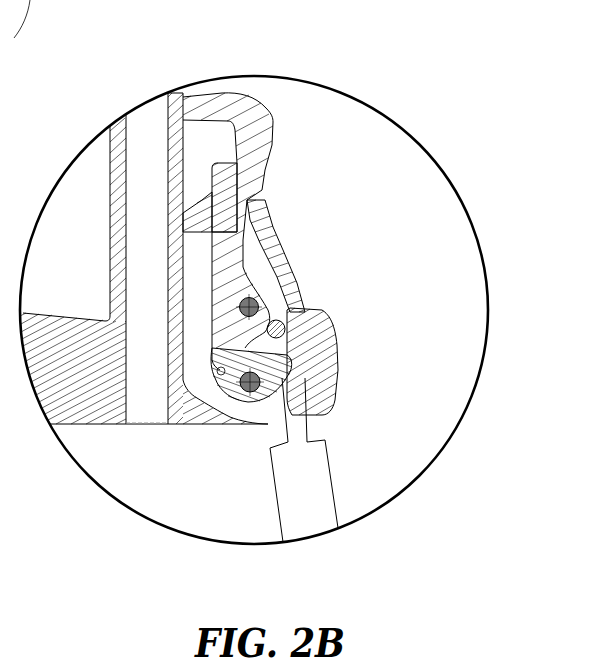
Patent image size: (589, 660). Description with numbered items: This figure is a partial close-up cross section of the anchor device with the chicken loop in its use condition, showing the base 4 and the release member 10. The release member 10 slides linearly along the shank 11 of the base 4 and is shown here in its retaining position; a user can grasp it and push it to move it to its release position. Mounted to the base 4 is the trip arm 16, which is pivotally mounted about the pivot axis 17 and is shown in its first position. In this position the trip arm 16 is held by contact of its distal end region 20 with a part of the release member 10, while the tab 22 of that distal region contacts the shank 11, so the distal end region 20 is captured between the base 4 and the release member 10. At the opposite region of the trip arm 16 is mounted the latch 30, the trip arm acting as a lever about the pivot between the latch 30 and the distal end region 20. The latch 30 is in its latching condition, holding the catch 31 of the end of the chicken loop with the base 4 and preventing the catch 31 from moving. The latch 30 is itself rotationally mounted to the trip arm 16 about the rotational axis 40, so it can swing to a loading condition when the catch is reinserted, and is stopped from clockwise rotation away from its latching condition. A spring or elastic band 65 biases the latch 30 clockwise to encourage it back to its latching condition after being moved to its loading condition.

The base 4 is at (315, 328).
The release member 10 is at (231, 109).
The shank 11 is at (178, 107).
The trip arm 16 is at (243, 207).
The pivot axis 17 is at (258, 298).
The distal end region 20 is at (227, 167).
The tab 22 is at (193, 213).
The latch 30 is at (277, 367).
The catch 31 is at (283, 345).
The rotational axis 40 is at (250, 382).
The elastic band 65 is at (205, 328).